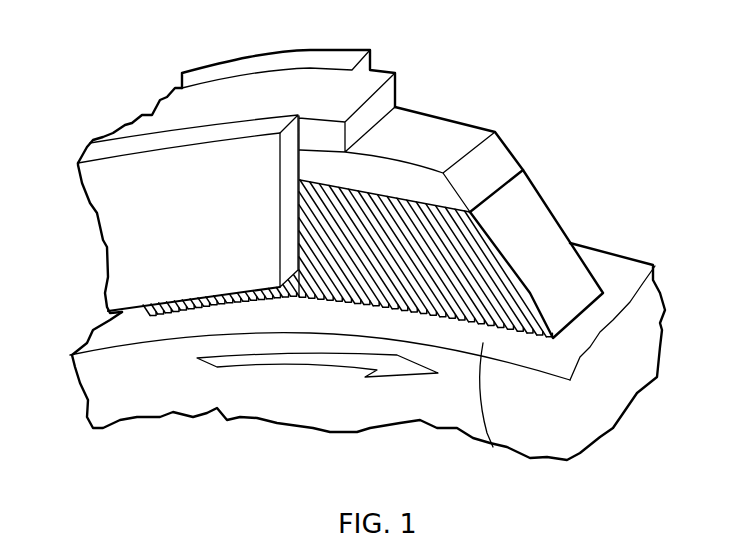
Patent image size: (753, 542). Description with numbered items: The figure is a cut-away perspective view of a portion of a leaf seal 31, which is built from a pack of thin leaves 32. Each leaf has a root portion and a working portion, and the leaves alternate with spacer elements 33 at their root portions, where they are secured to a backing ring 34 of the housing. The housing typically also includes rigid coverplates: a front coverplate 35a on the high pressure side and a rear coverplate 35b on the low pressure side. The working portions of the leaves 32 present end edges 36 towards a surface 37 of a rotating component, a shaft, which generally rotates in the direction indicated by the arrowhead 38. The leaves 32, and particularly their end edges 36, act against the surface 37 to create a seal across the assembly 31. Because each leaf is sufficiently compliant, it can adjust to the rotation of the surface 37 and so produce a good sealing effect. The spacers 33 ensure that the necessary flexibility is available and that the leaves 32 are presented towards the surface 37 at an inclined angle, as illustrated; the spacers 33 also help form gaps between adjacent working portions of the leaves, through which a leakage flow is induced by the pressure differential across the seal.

The leaf seal 31 is at (313, 174).
The leaves 32 is at (530, 222).
The spacer elements 33 is at (487, 121).
The backing ring 34 is at (160, 191).
The front coverplate 35a is at (128, 258).
The rear coverplate 35b is at (277, 60).
The end edges 36 is at (580, 320).
The surface 37 is at (493, 450).
The arrowhead 38 is at (243, 367).